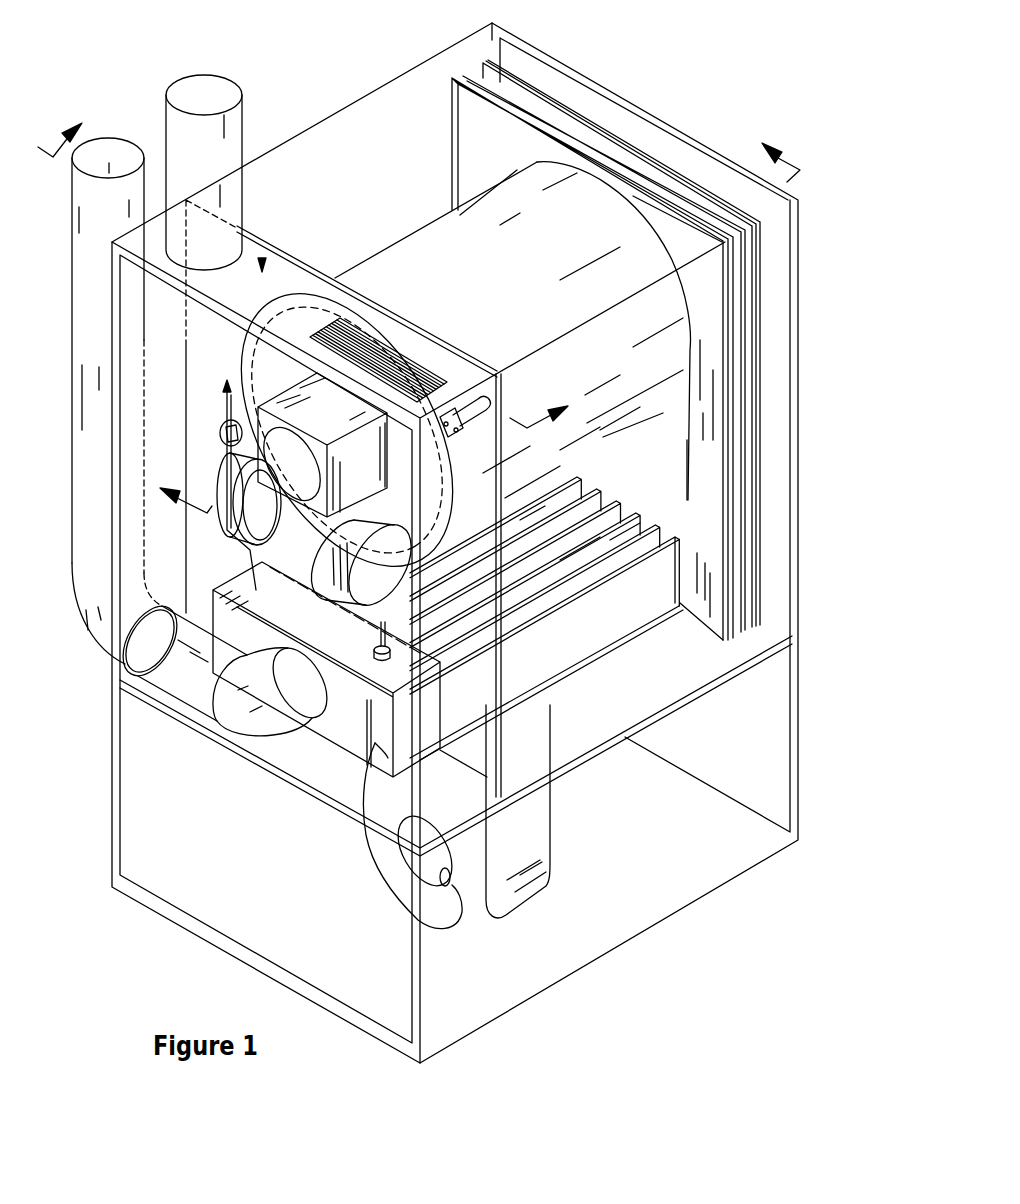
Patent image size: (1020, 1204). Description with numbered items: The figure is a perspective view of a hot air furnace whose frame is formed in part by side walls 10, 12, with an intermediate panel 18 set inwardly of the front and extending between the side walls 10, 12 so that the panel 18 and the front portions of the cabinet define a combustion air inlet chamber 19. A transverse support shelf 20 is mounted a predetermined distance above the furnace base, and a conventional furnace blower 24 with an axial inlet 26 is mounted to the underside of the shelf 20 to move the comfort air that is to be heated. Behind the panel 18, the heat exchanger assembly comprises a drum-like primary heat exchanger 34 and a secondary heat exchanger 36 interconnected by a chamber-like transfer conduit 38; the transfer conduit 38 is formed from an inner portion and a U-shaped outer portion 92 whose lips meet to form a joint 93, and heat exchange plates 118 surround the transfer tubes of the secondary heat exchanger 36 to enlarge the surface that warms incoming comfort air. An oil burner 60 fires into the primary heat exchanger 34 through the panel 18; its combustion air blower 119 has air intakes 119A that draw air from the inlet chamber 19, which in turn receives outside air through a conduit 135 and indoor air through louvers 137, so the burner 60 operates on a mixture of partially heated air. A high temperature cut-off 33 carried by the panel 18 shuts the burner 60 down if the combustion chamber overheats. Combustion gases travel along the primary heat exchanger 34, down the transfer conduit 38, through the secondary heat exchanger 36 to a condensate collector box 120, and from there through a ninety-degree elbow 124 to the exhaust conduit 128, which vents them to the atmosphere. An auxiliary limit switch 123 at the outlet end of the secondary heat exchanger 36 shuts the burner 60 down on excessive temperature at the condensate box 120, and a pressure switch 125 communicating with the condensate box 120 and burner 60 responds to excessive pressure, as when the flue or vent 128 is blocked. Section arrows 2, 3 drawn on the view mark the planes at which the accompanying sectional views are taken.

The side wall 10 is at (134, 318).
The side wall 12 is at (652, 900).
The intermediate panel 18 is at (303, 266).
The combustion air inlet chamber 19 is at (262, 266).
The transverse support shelf 20 is at (340, 810).
The furnace blower 24 is at (530, 841).
The axial inlet 26 is at (460, 918).
The high temperature cut-off 33 is at (446, 416).
The primary heat exchanger member 34 is at (520, 299).
The secondary heat exchanger 36 is at (627, 620).
The transfer conduit 38 is at (750, 376).
The burner 60 is at (372, 477).
The outer portion 92 is at (593, 125).
The joint 93 is at (453, 78).
The heat exchange plates 118 is at (530, 570).
The combustion air blower 119 is at (300, 540).
The air intakes 119A is at (318, 585).
The condensate collector box 120 is at (333, 716).
The auxiliary limit switch 123 is at (372, 758).
The 90° elbow 124 is at (267, 735).
The pressure switch 125 is at (220, 433).
The exhaust conduit 128 is at (80, 560).
The conduit 135 is at (244, 128).
The louvers 137 is at (405, 352).
The section line 2 is at (473, 321).
The section line 3 is at (311, 268).